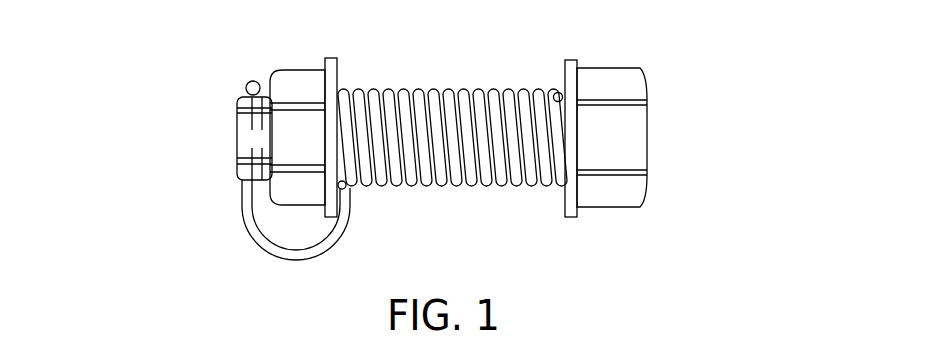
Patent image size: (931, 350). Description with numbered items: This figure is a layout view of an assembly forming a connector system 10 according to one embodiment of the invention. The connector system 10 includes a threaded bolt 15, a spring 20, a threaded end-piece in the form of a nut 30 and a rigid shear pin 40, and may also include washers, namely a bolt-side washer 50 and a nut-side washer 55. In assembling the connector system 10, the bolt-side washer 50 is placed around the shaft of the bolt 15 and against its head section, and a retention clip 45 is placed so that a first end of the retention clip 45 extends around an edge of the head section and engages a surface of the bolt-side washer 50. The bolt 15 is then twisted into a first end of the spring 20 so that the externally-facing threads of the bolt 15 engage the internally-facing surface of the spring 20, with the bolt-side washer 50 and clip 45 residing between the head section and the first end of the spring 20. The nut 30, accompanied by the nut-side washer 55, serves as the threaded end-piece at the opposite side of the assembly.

The connector system 10 is at (208, 122).
The threaded bolt 15 is at (288, 67).
The spring 20 is at (425, 85).
The nut 30 is at (652, 102).
The rigid shear pin 40 is at (233, 162).
The retention clip 45 is at (240, 225).
The bolt-side washer 50 is at (333, 57).
The nut-side washer 55 is at (573, 222).